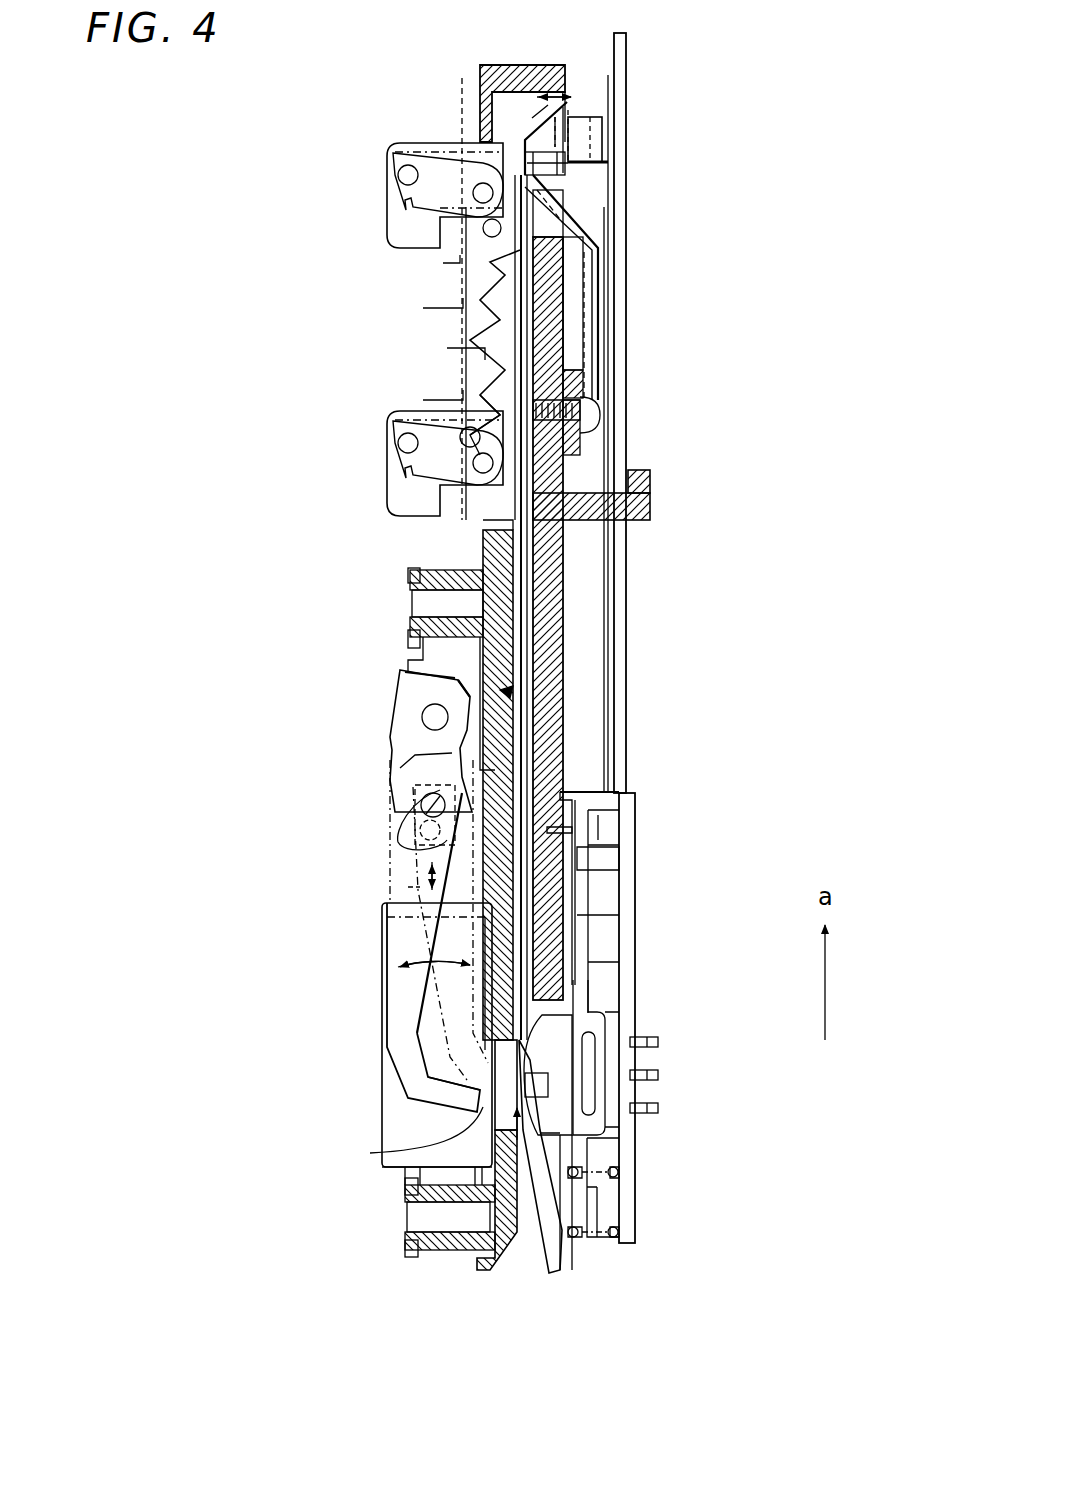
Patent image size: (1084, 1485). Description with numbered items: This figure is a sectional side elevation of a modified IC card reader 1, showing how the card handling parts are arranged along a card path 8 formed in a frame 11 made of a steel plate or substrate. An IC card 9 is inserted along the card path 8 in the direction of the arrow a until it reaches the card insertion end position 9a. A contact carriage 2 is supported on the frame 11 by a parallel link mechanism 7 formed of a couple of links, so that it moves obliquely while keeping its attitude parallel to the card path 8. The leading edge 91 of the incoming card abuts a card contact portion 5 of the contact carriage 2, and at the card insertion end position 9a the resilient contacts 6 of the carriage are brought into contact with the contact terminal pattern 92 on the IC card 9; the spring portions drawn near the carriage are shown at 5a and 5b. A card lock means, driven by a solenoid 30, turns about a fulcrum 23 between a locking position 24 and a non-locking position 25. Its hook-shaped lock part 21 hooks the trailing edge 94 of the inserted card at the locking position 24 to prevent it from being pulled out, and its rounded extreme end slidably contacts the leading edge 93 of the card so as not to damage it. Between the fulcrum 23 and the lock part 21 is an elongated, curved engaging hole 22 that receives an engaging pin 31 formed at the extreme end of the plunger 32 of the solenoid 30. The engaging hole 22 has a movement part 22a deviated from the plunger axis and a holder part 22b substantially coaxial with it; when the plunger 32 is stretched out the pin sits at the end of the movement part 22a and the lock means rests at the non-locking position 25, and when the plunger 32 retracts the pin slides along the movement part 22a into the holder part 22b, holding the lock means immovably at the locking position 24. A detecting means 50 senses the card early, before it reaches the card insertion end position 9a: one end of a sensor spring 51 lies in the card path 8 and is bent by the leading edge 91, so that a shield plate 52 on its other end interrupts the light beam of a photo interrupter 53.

The IC card reader 1 is at (256, 160).
The contact carriage 2 is at (417, 753).
The card contact portion 5 is at (560, 188).
The spring arm 5a is at (470, 128).
The spring arm 5b is at (457, 383).
The contacts 6 is at (557, 370).
The parallel link mechanism 7 is at (373, 180).
The card path 8 is at (518, 1242).
The IC card 9 is at (522, 653).
The card insertion end position 9a is at (530, 630).
The frame 11 is at (483, 550).
The lock part 21 is at (390, 1122).
The engaging hole 22 is at (292, 795).
The movement part 22a is at (430, 810).
The holder part 22b is at (425, 838).
The fulcrum 23 is at (417, 692).
The locking position 24 is at (440, 1095).
The non-locking position 25 is at (403, 1010).
The solenoid 30 is at (397, 1120).
The engaging pin 31 is at (445, 790).
The plunger 32 is at (408, 887).
The detecting means 50 is at (706, 82).
The sensor spring 51 is at (598, 234).
The shield plate 52 is at (602, 165).
The photo interrupter 53 is at (588, 133).
The leading edge 91 is at (513, 132).
The contact terminal pattern 92 is at (590, 450).
The leading edge 93 is at (507, 712).
The trailing edge 94 is at (560, 1228).